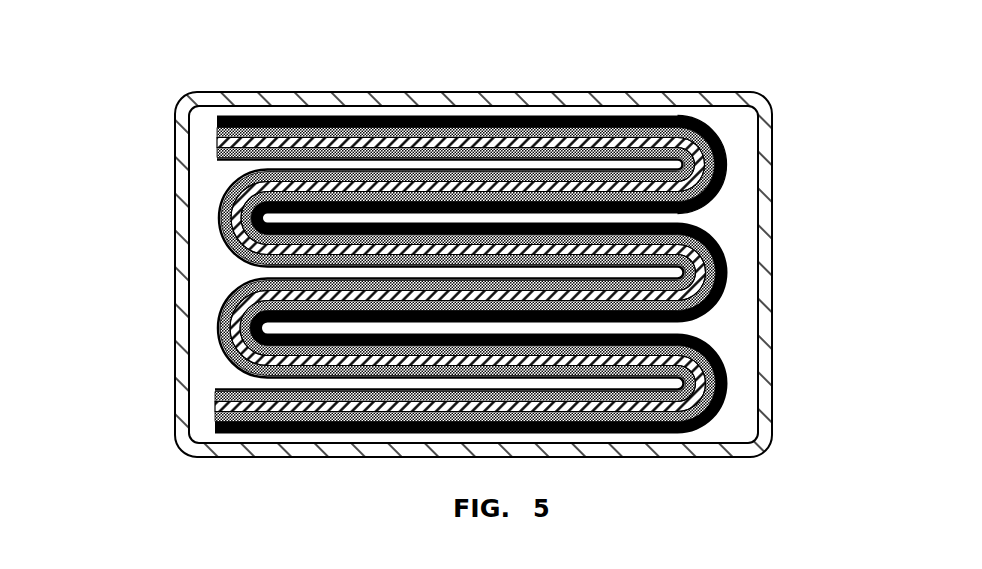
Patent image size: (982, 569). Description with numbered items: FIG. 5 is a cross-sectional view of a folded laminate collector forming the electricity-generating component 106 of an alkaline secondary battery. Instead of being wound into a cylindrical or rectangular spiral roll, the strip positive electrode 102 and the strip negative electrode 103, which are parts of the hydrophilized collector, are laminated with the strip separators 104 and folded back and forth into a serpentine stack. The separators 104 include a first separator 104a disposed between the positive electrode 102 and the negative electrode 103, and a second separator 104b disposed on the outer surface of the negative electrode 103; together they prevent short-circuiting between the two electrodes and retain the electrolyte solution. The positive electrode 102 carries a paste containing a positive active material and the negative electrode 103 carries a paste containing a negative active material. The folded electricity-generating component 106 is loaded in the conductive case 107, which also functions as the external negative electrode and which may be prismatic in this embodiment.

The positive electrode 102 is at (393, 128).
The negative electrode 103 is at (333, 125).
The separators 104 is at (76, 150).
The first separator 104a is at (215, 130).
The second separator 104b is at (215, 215).
The electricity-generating component 106 is at (725, 127).
The case 107 is at (772, 183).